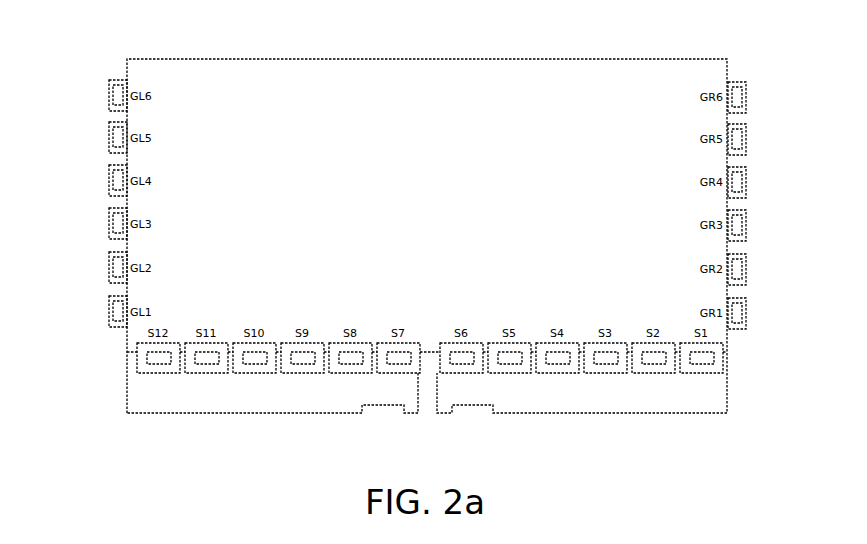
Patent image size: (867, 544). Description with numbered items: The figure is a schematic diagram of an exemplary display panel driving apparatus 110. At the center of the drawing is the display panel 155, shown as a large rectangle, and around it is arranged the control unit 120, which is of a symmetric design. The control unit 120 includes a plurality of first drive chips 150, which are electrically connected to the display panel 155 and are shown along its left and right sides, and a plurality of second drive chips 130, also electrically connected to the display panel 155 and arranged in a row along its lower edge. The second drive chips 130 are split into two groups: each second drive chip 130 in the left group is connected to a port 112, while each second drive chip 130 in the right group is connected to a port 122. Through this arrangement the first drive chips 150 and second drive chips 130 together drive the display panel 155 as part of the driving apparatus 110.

The display panel driving apparatus 110 is at (477, 248).
The port 112 is at (372, 407).
The control unit 120 is at (50, 262).
The port 122 is at (480, 412).
The second drive chip 130 is at (137, 355).
The first drive chip 150 is at (109, 268).
The display panel 155 is at (620, 70).